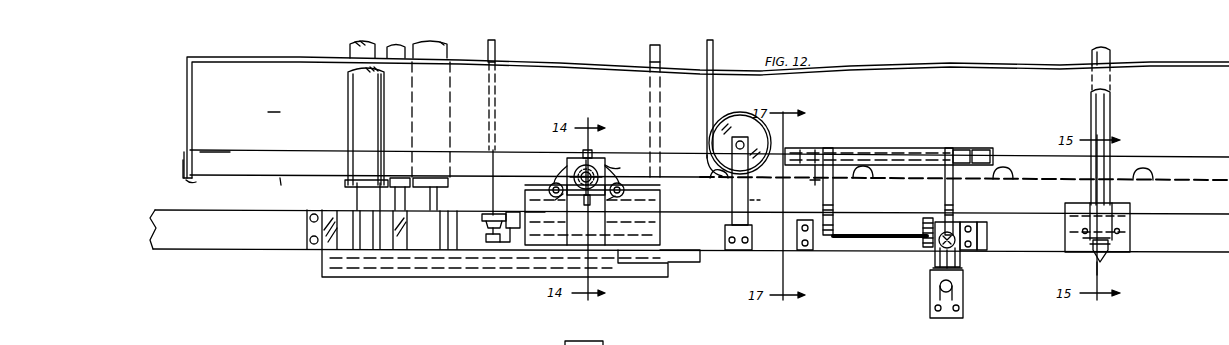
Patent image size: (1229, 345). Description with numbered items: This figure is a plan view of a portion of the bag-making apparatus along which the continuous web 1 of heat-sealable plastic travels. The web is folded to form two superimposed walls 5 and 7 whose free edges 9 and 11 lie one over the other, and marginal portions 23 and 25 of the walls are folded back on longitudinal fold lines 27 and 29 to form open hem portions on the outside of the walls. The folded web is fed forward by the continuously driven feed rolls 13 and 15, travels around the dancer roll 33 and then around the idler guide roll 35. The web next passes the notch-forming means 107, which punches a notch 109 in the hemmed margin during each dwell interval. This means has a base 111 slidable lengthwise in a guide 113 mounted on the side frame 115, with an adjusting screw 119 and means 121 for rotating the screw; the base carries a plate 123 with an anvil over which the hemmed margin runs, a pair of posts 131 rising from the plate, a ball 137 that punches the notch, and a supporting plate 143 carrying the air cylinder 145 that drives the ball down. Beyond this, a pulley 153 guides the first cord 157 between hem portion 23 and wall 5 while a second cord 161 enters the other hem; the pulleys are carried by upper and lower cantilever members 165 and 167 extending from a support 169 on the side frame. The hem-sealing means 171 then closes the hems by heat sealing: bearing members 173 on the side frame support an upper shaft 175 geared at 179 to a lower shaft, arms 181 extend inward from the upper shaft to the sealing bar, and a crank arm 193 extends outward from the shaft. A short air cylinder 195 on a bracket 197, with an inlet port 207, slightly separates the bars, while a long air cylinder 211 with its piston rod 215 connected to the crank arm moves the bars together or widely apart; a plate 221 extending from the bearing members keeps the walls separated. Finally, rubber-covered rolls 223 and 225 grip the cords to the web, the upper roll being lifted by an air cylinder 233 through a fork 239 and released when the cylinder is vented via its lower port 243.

The continuous web 1 is at (182, 88).
The wall 5 is at (274, 105).
The wall 7 is at (187, 128).
The free edge 9 is at (240, 152).
The free edge 11 is at (184, 157).
The feed roll 13 is at (350, 52).
The feed roll 15 is at (355, 112).
The marginal portion 23 is at (270, 165).
The marginal portion 25 is at (183, 163).
The longitudinal fold line 27 is at (289, 187).
The longitudinal fold line 29 is at (184, 178).
The dancer roll 33 is at (403, 177).
The idler guide roll 35 is at (434, 58).
The notch-forming means 107 is at (563, 160).
The notch 109 is at (712, 176).
The base 111 is at (607, 232).
The guide 113 is at (540, 240).
The side frame 115 is at (698, 258).
The adjusting screw 119 is at (530, 212).
The means for rotating the screw 121 is at (485, 206).
The plate 123 is at (608, 160).
The posts 131 is at (552, 184).
The ball 137 is at (556, 203).
The supporting plate 143 is at (628, 204).
The air cylinder 145 is at (583, 156).
The pulley 153 is at (741, 120).
The first cord 157 is at (707, 104).
The second cord 161 is at (713, 52).
The upper cantilever member 165 is at (732, 190).
The lower cantilever member 167 is at (750, 203).
The support 169 is at (735, 250).
The hem-sealing means 171 is at (890, 137).
The bearing members 173 is at (818, 250).
The upper shaft 175 is at (860, 245).
The gearing 179 is at (933, 210).
The arms 181 is at (833, 190).
The crank arm 193 is at (933, 275).
The short air cylinder 195 is at (960, 258).
The bracket 197 is at (958, 268).
The inlet port 207 is at (980, 227).
The air cylinder 211 is at (930, 302).
The piston rod 215 is at (946, 318).
The plate 221 is at (814, 180).
The rubber-covered roll 223 is at (1092, 54).
The rubber-covered roll 225 is at (1096, 104).
The air cylinder 233 is at (1103, 260).
The fork 239 is at (1090, 252).
The lower port 243 is at (1092, 258).